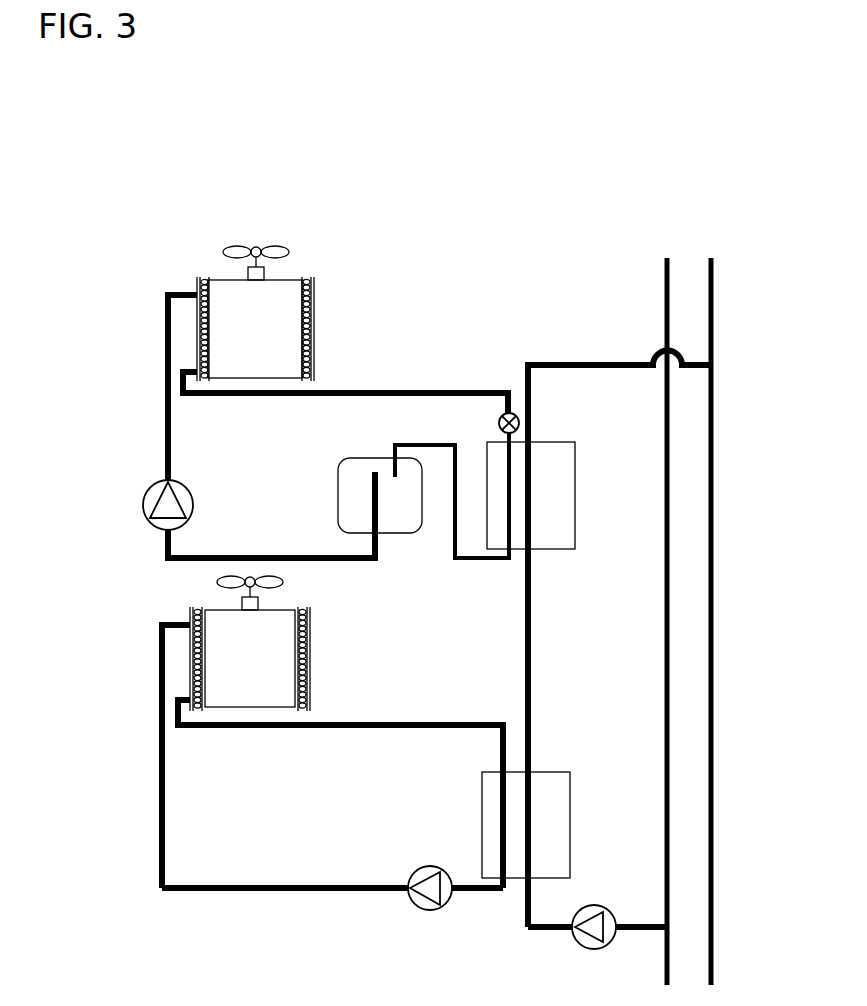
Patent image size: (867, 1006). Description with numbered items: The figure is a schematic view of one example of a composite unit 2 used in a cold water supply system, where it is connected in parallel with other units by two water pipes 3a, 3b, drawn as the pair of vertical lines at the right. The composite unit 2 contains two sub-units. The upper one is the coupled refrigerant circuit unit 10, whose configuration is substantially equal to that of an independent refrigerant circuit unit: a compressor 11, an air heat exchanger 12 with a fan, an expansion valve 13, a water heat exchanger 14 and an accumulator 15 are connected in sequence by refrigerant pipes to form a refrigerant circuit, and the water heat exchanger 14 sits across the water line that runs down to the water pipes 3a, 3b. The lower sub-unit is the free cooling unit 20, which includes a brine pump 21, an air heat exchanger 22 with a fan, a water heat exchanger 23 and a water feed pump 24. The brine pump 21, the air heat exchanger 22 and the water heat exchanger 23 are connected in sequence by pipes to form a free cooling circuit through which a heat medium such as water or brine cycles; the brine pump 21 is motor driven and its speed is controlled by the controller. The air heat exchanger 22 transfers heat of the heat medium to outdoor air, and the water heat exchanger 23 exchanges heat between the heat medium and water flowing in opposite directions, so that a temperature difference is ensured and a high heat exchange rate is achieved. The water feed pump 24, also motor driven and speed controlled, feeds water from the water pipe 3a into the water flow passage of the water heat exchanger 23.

The composite unit 2 is at (594, 190).
The water pipe 3a is at (670, 287).
The water pipe 3b is at (713, 328).
The coupled refrigerant circuit unit 10 is at (137, 313).
The compressor 11 is at (193, 500).
The air heat exchanger 12 is at (316, 283).
The expansion valve 13 is at (497, 421).
The water heat exchanger 14 is at (575, 455).
The accumulator 15 is at (338, 471).
The free cooling unit 20 is at (135, 643).
The brine pump 21 is at (438, 868).
The air heat exchanger 22 is at (312, 630).
The water heat exchanger 23 is at (570, 785).
The water feed pump 24 is at (592, 950).